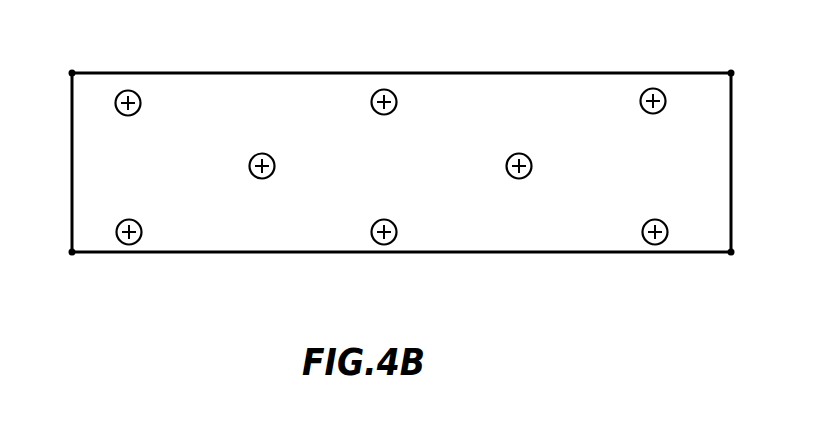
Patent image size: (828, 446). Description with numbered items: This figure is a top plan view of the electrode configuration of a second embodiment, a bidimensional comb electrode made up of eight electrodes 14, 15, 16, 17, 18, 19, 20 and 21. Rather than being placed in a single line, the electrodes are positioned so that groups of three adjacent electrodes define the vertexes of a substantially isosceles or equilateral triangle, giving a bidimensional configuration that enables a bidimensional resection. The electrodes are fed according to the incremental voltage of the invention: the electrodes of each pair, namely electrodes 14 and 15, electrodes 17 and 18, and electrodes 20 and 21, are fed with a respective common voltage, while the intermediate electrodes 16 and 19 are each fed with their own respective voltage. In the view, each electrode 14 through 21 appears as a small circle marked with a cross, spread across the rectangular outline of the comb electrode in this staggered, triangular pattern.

The electrode 14 is at (140, 222).
The electrode 15 is at (141, 102).
The electrode 16 is at (270, 176).
The electrode 17 is at (396, 226).
The electrode 18 is at (396, 112).
The electrode 19 is at (526, 155).
The electrode 20 is at (650, 220).
The electrode 21 is at (662, 111).